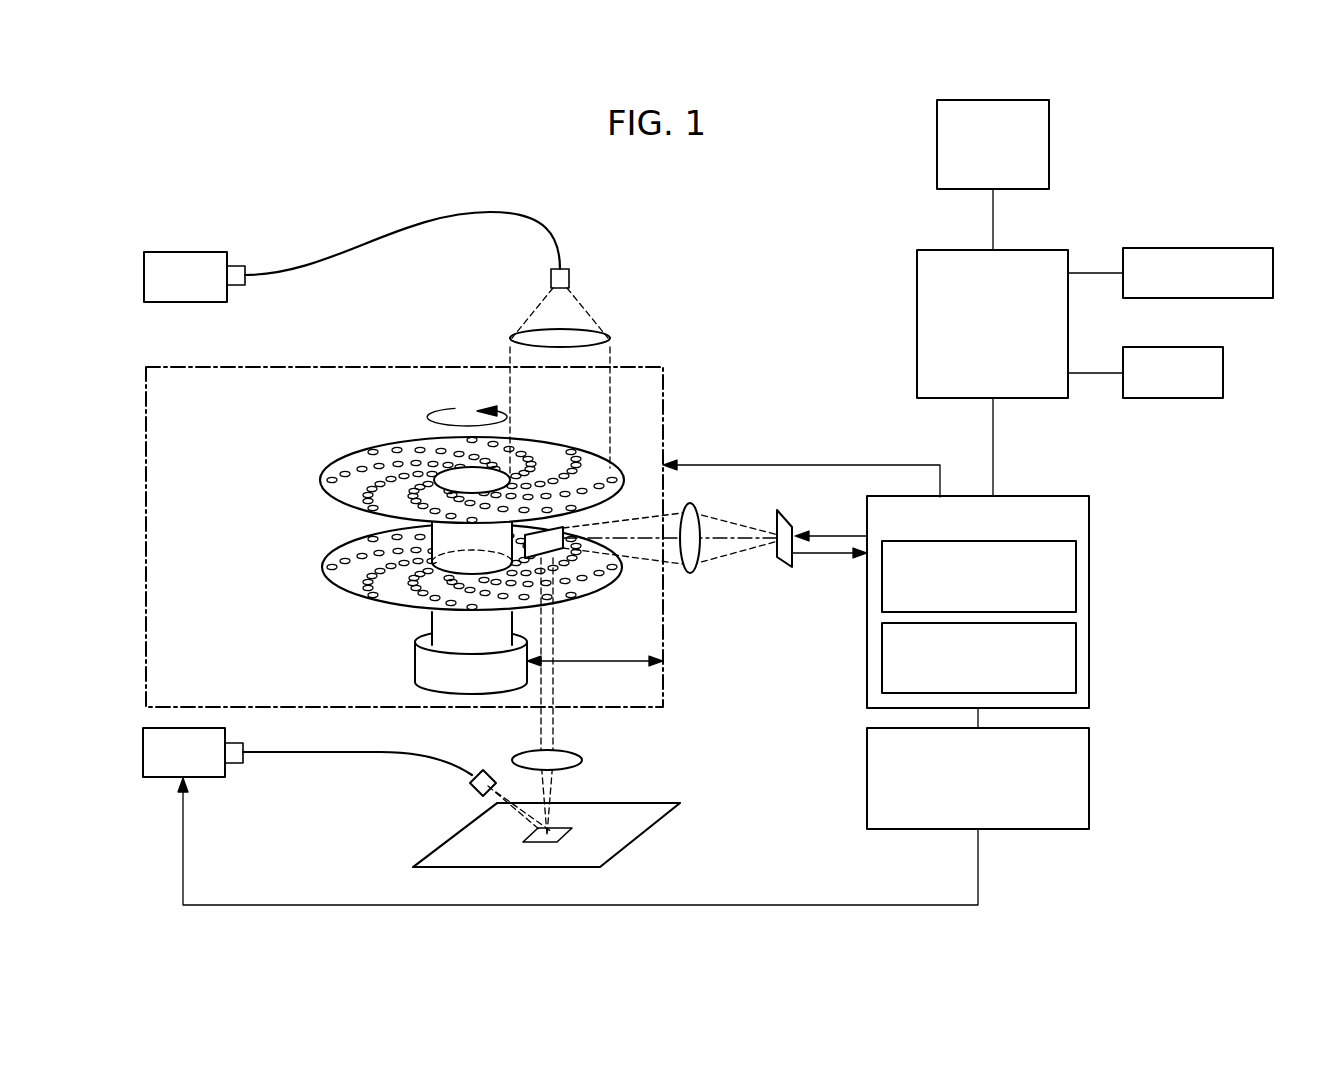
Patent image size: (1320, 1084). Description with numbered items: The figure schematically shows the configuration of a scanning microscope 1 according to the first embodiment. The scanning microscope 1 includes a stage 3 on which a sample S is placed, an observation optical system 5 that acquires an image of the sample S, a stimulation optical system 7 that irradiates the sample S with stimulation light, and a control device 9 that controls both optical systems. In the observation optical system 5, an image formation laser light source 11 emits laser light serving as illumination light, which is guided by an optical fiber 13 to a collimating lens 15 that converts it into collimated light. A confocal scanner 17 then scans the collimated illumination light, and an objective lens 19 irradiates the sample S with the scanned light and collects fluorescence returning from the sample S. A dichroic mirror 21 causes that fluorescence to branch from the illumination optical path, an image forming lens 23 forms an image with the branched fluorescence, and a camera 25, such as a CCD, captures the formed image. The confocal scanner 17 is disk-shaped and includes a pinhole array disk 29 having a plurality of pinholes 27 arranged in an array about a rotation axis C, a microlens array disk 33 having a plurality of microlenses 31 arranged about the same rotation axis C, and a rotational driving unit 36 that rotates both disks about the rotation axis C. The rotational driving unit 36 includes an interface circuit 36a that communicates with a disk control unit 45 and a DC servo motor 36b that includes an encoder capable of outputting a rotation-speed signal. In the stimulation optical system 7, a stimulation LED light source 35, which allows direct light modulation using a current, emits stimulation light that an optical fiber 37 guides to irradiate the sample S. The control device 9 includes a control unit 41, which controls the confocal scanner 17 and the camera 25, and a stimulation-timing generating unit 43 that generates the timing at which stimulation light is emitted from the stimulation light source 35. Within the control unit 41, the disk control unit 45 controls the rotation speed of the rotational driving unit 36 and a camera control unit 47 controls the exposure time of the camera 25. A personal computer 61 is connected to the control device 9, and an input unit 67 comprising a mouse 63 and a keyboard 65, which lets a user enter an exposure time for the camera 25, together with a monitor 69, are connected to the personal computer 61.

The scanning microscope 1 is at (262, 150).
The stage 3 is at (455, 834).
The observation optical system 5 is at (690, 242).
The stimulation optical system 7 is at (160, 853).
The control device 9 is at (1118, 470).
The image formation laser light source 11 is at (183, 252).
The optical fiber 13 is at (478, 210).
The collimating lens 15 is at (610, 340).
The confocal scanner 17 is at (138, 352).
The objective lens 19 is at (582, 760).
The dichroic mirror 21 is at (566, 530).
The image forming lens 23 is at (690, 574).
The camera 25 is at (790, 568).
The pinholes 27 is at (350, 570).
The pinhole array disk 29 is at (327, 575).
The microlenses 31 is at (365, 462).
The microlens array disk 33 is at (327, 478).
The stimulation LED light source 35 is at (205, 778).
The rotational driving unit 36 is at (325, 682).
The interface circuit 36a is at (415, 663).
The DC servo motor 36b is at (432, 623).
The optical fiber 37 is at (290, 753).
The control unit 41 is at (1089, 521).
The stimulation-timing generating unit 43 is at (1089, 755).
The disk control unit 45 is at (1076, 562).
The camera control unit 47 is at (1076, 645).
The personal computer 61 is at (917, 318).
The mouse 63 is at (1207, 399).
The keyboard 65 is at (1258, 299).
The input unit 67 is at (1195, 470).
The monitor 69 is at (937, 141).
The rotation axis C is at (445, 478).
The sample S is at (575, 835).